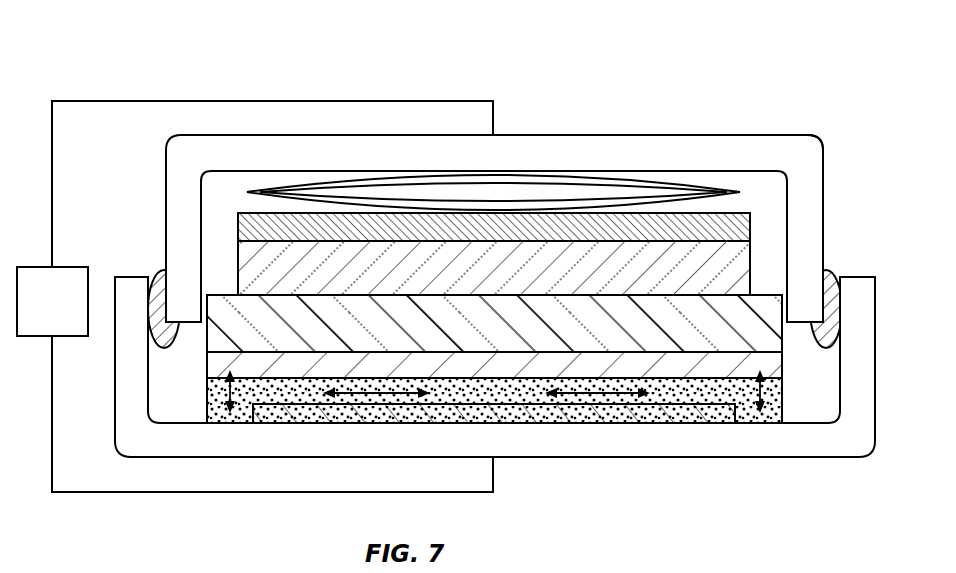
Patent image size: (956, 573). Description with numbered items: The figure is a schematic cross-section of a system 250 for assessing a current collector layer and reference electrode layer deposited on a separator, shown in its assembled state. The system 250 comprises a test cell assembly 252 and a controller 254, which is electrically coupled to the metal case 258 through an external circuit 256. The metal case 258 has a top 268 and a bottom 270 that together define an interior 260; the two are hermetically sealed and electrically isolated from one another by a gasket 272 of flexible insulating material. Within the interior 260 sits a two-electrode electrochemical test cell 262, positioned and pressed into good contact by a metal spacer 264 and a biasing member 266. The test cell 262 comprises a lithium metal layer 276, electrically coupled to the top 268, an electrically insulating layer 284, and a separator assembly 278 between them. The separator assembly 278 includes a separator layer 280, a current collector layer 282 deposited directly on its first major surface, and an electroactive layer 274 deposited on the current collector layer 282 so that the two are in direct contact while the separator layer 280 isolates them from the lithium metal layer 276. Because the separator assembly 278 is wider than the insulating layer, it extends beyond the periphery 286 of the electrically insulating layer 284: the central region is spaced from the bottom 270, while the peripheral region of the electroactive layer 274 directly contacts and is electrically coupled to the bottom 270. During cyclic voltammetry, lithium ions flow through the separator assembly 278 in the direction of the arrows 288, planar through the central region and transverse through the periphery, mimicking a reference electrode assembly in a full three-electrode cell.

The system 250 is at (777, 118).
The test cell assembly 252 is at (665, 135).
The controller 254 is at (52, 301).
The external circuit 256 is at (358, 101).
The metal case 258 is at (168, 175).
The interior 260 is at (232, 190).
The two-electrode electrochemical test cell 262 is at (225, 278).
The metal spacer 264 is at (750, 228).
The biasing member 266 is at (740, 192).
The top 268 is at (570, 135).
The bottom 270 is at (650, 457).
The gasket 272 is at (827, 270).
The electroactive layer 274 is at (228, 423).
The lithium metal layer 276 is at (238, 250).
The separator assembly 278 is at (800, 377).
The separator layer 280 is at (494, 323).
The current collector layer 282 is at (207, 365).
The electrically insulating layer 284 is at (540, 423).
The periphery 286 is at (736, 414).
The arrows 288 is at (765, 397).